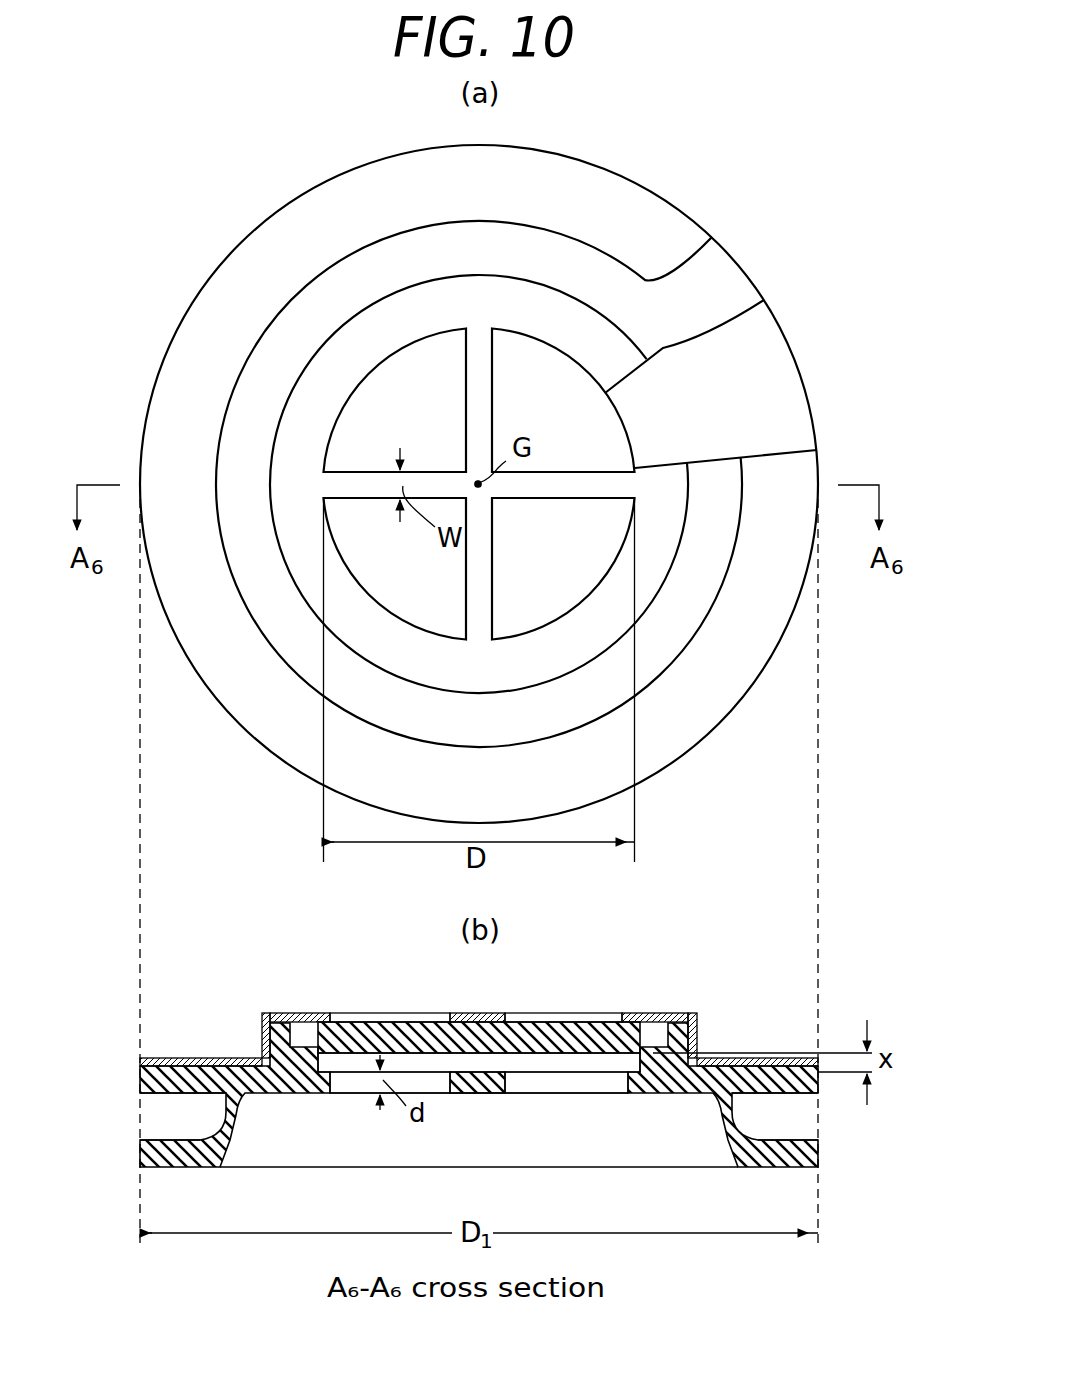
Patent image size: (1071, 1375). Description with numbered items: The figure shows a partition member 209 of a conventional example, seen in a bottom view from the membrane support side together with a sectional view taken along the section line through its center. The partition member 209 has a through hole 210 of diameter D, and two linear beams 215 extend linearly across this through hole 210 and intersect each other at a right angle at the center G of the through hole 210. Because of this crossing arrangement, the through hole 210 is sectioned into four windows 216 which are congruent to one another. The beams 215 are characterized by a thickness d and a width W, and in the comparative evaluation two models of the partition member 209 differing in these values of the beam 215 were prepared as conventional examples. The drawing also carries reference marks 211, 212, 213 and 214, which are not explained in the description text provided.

The partition member 209 is at (820, 366).
The through hole 210 is at (548, 583).
The electrode-free region (groove) 211 is at (723, 368).
The cover electrode layer 212 is at (650, 1022).
The peripheral groove of base 213 is at (190, 1112).
The divided electrode 214 is at (535, 331).
The linear beam 215 is at (465, 387).
The window 216 is at (378, 420).